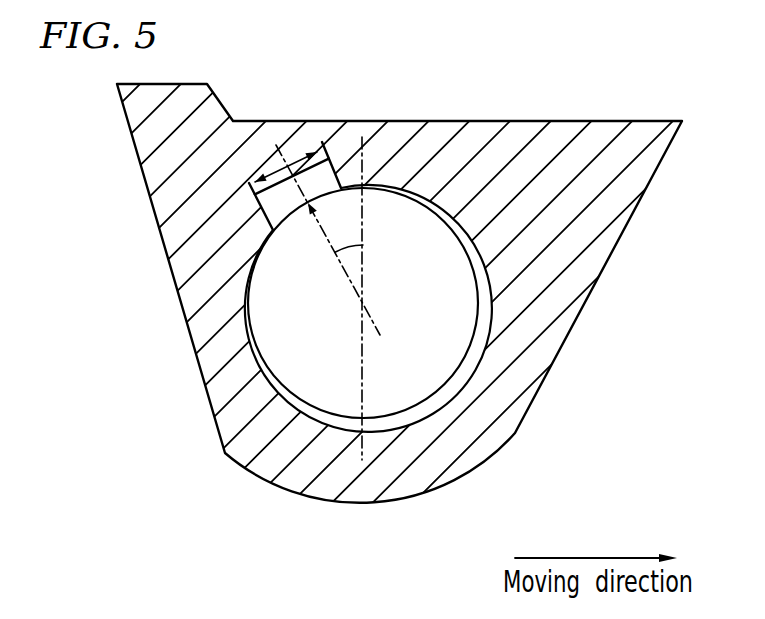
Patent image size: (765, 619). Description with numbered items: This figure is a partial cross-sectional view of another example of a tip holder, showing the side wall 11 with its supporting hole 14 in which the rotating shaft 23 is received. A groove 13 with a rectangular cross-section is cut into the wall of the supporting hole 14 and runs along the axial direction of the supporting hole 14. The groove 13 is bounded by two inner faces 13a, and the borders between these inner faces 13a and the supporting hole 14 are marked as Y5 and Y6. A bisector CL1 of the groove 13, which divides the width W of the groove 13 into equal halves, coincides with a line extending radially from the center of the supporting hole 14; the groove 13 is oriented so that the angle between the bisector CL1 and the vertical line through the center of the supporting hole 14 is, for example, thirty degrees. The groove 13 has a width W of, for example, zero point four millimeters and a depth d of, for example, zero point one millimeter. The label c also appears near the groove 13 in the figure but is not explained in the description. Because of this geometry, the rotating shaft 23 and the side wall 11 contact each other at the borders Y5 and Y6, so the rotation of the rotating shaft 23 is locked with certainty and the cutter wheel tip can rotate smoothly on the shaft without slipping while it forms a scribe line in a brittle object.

The side wall 11 is at (542, 303).
The groove 13 is at (305, 175).
The inner faces 13a is at (326, 170).
The supporting hole 14 is at (442, 398).
The rotating shaft 23 is at (295, 362).
The border Y5 is at (273, 224).
The border Y6 is at (342, 182).
The bisector CL1 is at (311, 230).
The width W is at (245, 148).
The depth d is at (295, 203).
The point c is at (326, 173).